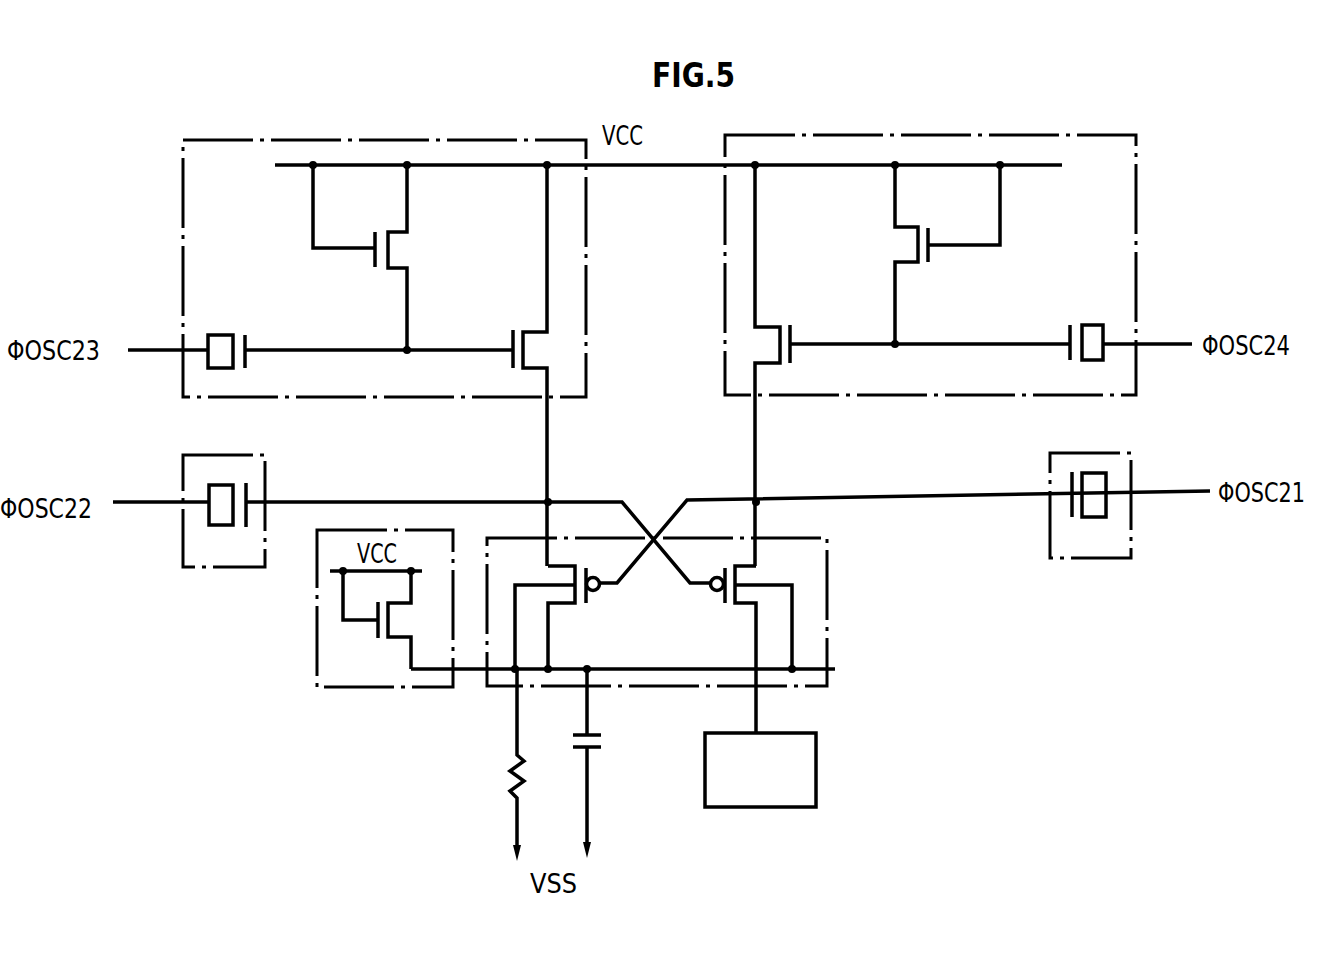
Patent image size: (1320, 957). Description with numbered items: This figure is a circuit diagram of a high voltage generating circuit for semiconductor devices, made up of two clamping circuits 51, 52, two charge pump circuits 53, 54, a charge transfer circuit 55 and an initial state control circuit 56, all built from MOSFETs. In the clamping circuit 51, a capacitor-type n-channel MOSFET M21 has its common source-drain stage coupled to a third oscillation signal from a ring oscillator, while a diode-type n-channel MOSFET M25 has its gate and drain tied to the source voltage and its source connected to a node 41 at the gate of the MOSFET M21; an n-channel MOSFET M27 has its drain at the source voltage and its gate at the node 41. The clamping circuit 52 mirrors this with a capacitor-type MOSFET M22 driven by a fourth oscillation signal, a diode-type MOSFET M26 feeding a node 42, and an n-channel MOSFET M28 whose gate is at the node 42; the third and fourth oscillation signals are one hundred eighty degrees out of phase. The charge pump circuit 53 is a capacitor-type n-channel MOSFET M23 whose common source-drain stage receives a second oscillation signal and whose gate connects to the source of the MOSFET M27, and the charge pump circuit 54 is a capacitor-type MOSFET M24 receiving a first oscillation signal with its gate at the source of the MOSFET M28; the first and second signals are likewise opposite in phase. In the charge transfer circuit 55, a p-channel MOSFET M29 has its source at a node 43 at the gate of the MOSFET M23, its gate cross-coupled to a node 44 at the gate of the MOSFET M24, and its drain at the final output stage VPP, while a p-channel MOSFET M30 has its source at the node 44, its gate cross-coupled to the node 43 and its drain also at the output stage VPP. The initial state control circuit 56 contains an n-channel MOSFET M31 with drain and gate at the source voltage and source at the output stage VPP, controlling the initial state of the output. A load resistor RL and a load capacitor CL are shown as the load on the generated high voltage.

The clamping circuit 51 is at (432, 139).
The clamping circuit 52 is at (825, 135).
The charge pump circuit 53 is at (268, 466).
The charge pump circuit 54 is at (1133, 544).
The charge transfer circuit 55 is at (829, 568).
The initial state control circuit 56 is at (316, 620).
The node 41 is at (407, 353).
The node 42 is at (895, 347).
The node 43 is at (548, 499).
The node 44 is at (758, 499).
The capacitor-type n-channel MOSFET M21 is at (238, 333).
The capacitor-type n-channel MOSFET M22 is at (1079, 325).
The capacitor-type n-channel MOSFET M23 is at (218, 491).
The capacitor-type n-channel MOSFET M24 is at (1082, 516).
The diode-type n-channel MOSFET M25 is at (394, 247).
The diode-type n-channel MOSFET M26 is at (912, 243).
The n-channel MOSFET M27 is at (546, 365).
The n-channel MOSFET M28 is at (759, 365).
The p-channel MOSFET M29 is at (567, 579).
The p-channel MOSFET M30 is at (763, 635).
The n-channel MOSFET M31 is at (392, 620).
The load capacitor CL is at (597, 725).
The load resistor RL is at (508, 765).
The final output stage VPP is at (760, 770).